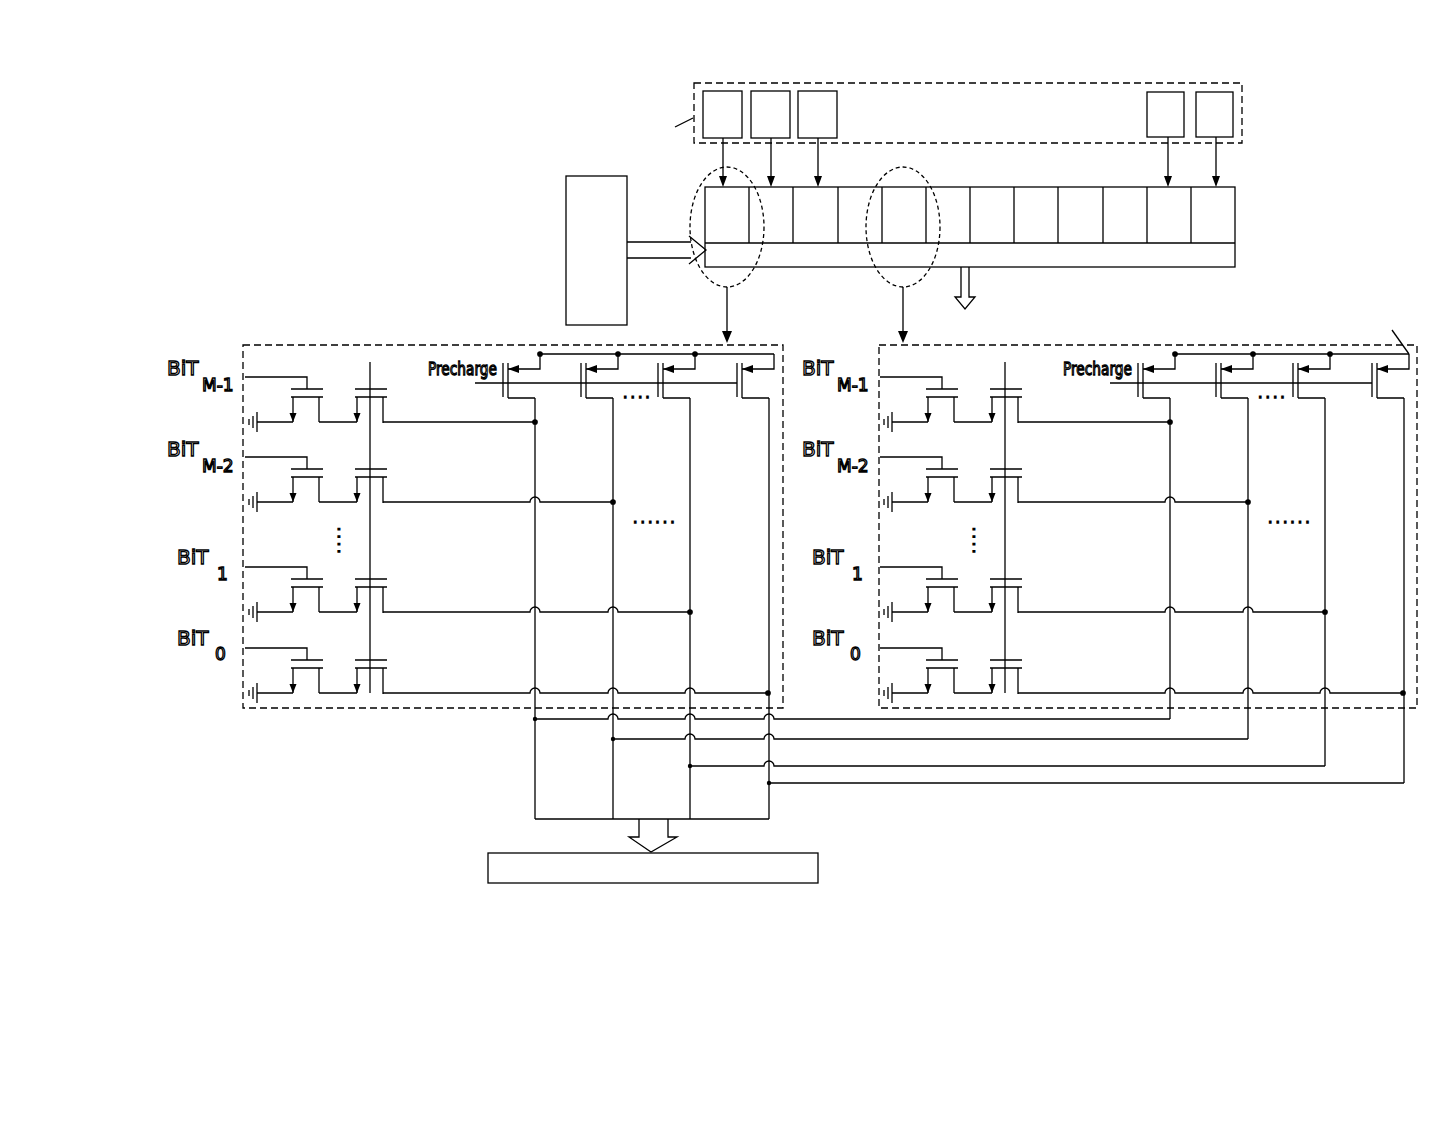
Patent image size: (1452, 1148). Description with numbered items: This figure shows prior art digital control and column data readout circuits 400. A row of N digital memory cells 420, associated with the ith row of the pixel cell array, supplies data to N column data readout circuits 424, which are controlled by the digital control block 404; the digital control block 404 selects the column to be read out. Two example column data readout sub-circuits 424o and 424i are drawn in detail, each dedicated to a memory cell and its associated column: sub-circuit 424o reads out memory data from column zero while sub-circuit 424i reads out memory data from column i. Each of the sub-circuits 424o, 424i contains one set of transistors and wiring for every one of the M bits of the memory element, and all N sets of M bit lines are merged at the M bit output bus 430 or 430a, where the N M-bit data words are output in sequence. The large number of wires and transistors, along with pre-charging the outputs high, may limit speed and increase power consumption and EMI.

The digital control and column data readout circuits 400 is at (285, 107).
The digital control block 404 is at (575, 173).
The digital memory cells 420 is at (733, 92).
The column data readout circuits 424 is at (1232, 232).
The column data readout sub-circuit 424o is at (422, 345).
The column data readout sub-circuit 424i is at (1185, 345).
The M bit output bus 430 is at (975, 300).
The M bit output bus 430a is at (488, 863).